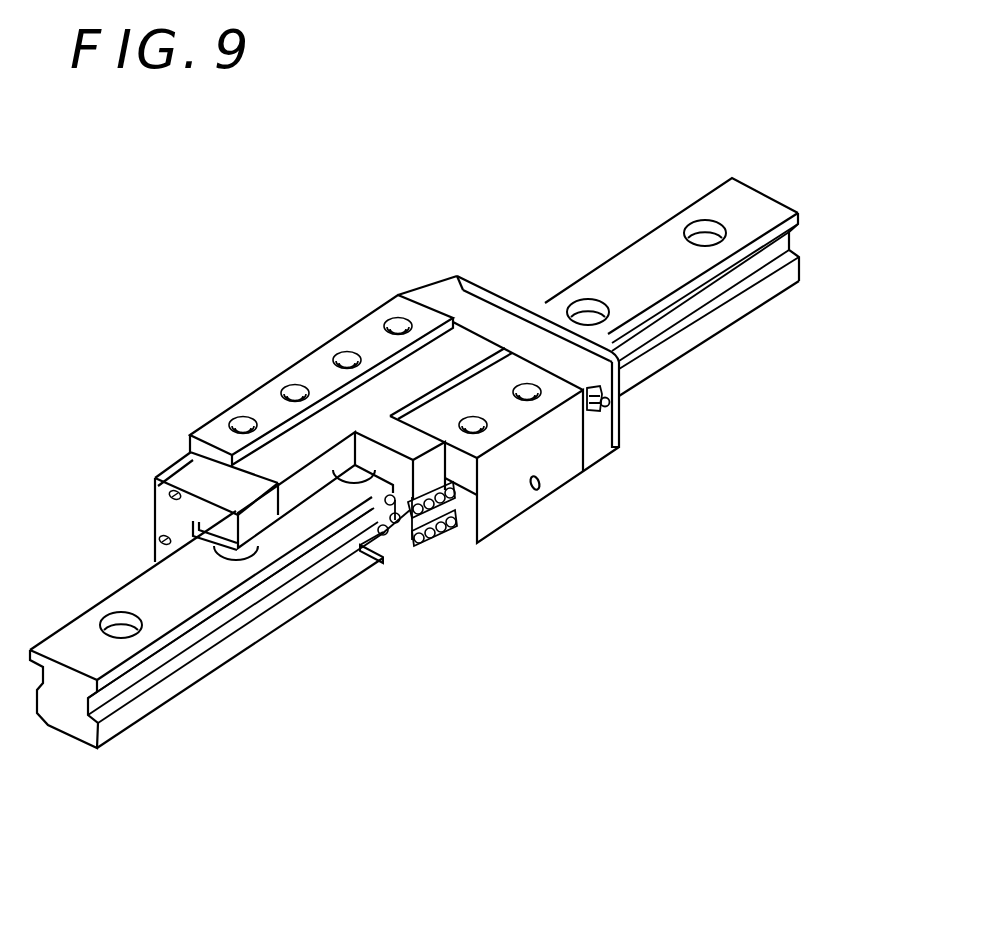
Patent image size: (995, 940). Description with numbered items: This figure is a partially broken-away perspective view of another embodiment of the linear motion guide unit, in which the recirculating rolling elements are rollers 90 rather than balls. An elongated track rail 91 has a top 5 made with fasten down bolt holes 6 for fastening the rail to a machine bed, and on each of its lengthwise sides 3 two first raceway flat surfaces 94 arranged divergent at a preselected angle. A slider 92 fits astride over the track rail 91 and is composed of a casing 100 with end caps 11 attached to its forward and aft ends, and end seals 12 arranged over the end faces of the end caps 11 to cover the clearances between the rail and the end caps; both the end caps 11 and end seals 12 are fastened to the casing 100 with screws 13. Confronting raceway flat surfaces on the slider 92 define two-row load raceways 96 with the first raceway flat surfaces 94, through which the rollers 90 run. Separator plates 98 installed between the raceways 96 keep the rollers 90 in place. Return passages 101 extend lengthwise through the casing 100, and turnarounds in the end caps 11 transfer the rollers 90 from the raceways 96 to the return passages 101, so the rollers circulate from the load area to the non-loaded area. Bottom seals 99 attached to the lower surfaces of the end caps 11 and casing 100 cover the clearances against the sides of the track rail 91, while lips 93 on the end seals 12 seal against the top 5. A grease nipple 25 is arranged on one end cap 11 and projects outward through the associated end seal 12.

The lengthwise sides 3 is at (125, 695).
The top 5 is at (85, 643).
The fasten down bolt holes 6 is at (120, 625).
The end caps 11 is at (447, 300).
The end seals 12 is at (477, 288).
The screws 13 is at (171, 494).
The grease nipple 25 is at (612, 397).
The rollers 90 is at (440, 535).
The track rail 91 is at (633, 262).
The slider 92 is at (276, 365).
The lips 93 is at (192, 640).
The first raceway flat surfaces 94 is at (190, 633).
The raceways 96 is at (410, 520).
The separator plates 98 is at (395, 527).
The bottom seals 99 is at (377, 522).
The casing 100 is at (543, 433).
The return passages 101 is at (455, 487).